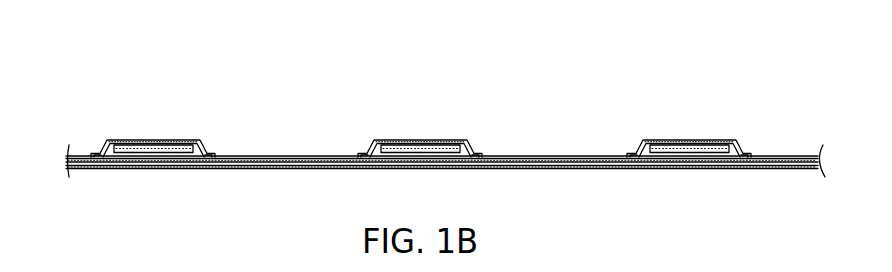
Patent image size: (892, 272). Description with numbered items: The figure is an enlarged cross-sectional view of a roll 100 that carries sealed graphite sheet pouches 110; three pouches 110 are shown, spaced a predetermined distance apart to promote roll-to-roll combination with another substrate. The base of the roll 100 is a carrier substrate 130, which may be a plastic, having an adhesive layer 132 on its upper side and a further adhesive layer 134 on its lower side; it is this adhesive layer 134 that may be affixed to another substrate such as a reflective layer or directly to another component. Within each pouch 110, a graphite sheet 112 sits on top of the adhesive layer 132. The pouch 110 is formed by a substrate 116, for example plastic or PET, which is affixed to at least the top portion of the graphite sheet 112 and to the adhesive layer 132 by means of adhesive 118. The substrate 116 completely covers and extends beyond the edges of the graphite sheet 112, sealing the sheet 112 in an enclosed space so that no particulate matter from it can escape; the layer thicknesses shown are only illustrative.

The roll 100 is at (74, 94).
The sealed graphite sheet pouch 110 is at (152, 126).
The graphite sheet 112 is at (182, 153).
The substrate 116 is at (170, 140).
The adhesive 118 is at (107, 146).
The carrier substrate 130 is at (165, 172).
The adhesive layer 132 is at (77, 156).
The adhesive layer 134 is at (118, 173).